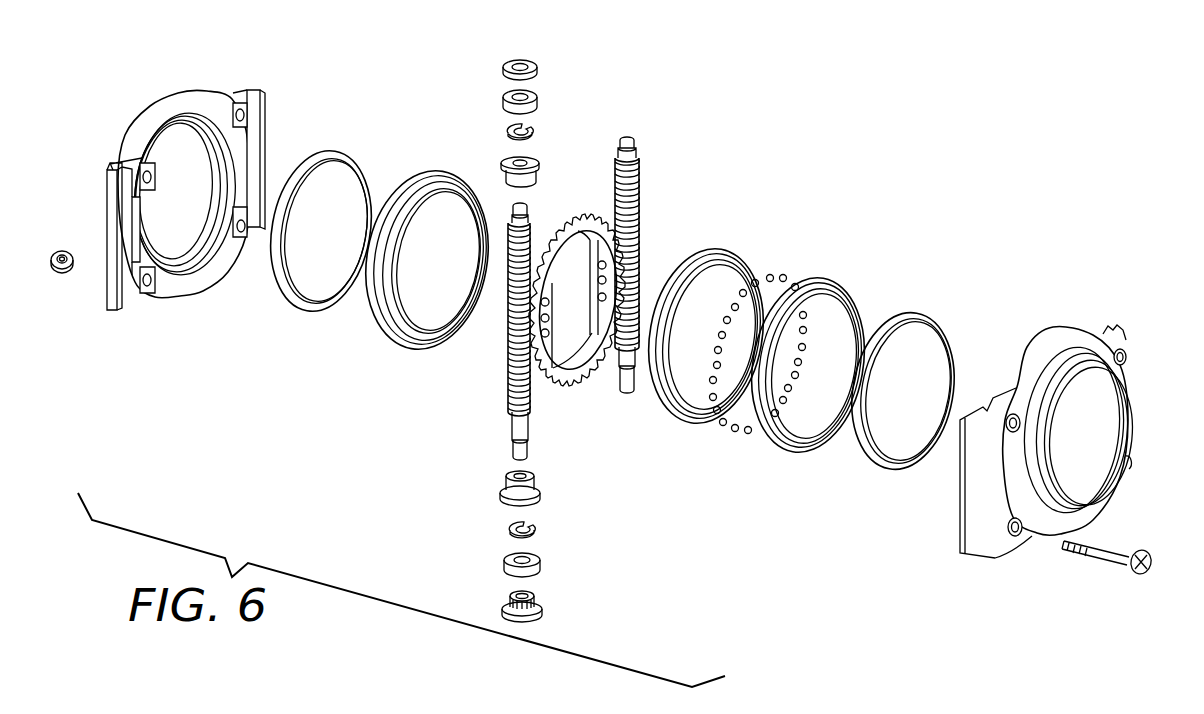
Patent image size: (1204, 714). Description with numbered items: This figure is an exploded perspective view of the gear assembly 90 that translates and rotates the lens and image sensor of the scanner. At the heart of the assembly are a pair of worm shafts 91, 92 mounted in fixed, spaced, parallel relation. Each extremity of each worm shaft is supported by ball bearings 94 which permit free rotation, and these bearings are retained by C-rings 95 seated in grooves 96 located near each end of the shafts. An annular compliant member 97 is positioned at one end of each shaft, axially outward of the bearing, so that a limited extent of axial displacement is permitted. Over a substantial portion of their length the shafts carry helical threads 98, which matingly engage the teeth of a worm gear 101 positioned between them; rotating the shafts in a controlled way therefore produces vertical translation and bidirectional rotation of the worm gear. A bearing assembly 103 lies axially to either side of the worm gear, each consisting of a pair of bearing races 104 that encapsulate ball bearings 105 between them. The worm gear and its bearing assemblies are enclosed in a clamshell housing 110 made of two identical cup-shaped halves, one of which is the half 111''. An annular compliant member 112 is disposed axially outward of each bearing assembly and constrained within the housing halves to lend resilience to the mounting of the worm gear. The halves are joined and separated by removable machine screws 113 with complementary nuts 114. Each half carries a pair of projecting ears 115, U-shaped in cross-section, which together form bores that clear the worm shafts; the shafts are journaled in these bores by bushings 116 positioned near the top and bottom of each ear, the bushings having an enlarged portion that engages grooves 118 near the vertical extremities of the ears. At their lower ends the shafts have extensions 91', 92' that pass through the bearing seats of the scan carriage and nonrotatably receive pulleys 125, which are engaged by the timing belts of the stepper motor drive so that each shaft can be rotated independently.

The gear assembly 90 is at (563, 284).
The worm shaft 91 is at (658, 160).
The extension of worm shaft 91' is at (645, 415).
The worm shaft 92 is at (478, 217).
The extension of worm shaft 92' is at (552, 461).
The ball bearings 94 is at (538, 96).
The C-rings 95 is at (508, 127).
The grooves 96 is at (637, 147).
The annular compliant member 97 is at (540, 62).
The helical threads 98 is at (640, 288).
The worm gear 101 is at (568, 377).
The bearing assembly 103 is at (619, 337).
The bearing races 104 is at (725, 253).
The ball bearings 105 is at (785, 280).
The clamshell housing 110 is at (619, 298).
The cup-shaped half 111'' is at (657, 293).
The annular compliant member 112 is at (280, 287).
The machine screws 113 is at (1115, 560).
The nuts 114 is at (55, 270).
The projecting ears 115 is at (968, 517).
The bushings 116 is at (503, 162).
The grooves 118 is at (127, 170).
The pulleys 125 is at (541, 610).